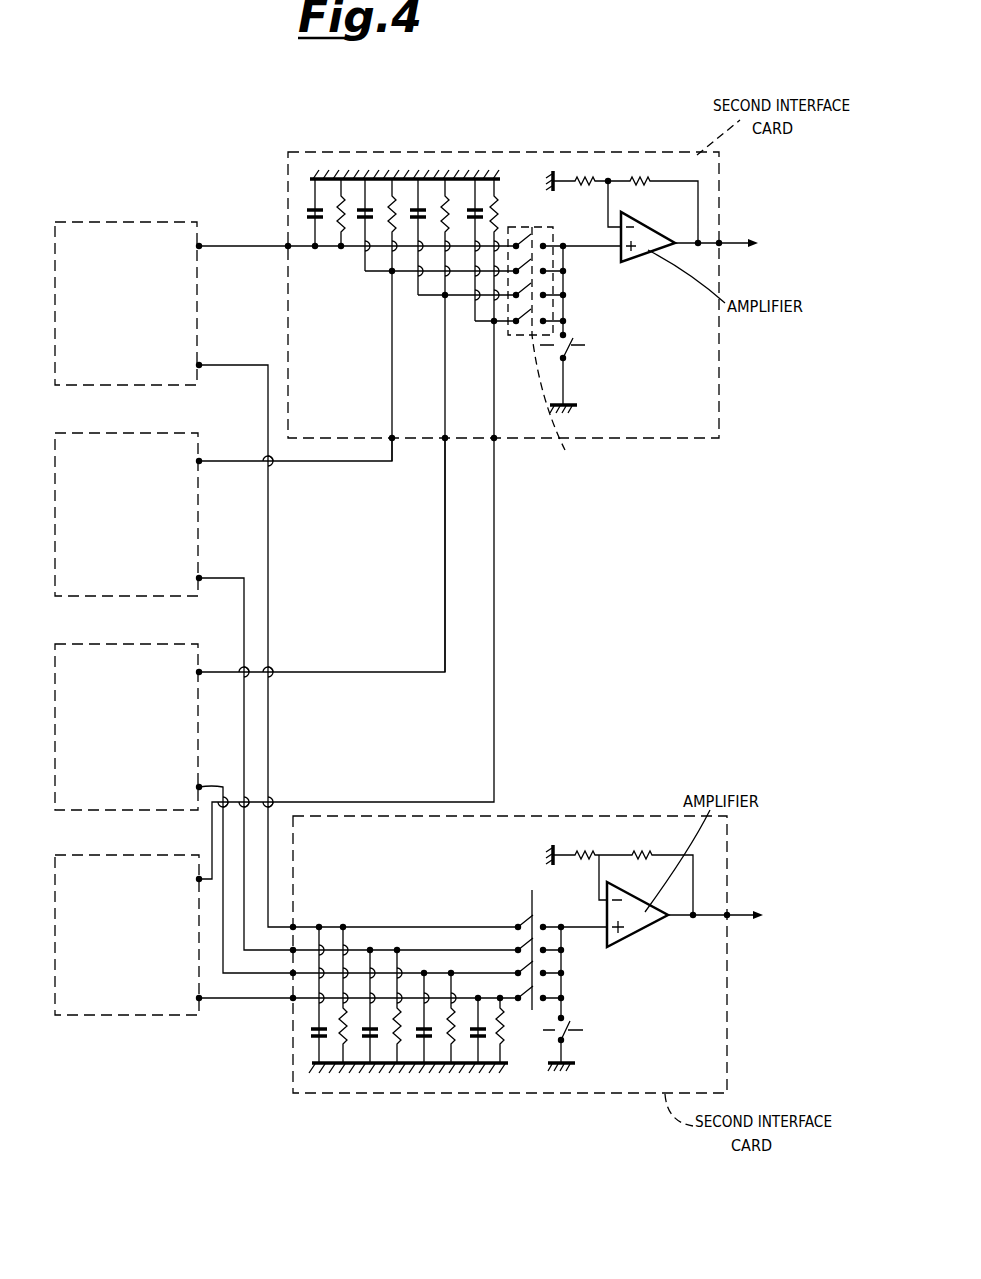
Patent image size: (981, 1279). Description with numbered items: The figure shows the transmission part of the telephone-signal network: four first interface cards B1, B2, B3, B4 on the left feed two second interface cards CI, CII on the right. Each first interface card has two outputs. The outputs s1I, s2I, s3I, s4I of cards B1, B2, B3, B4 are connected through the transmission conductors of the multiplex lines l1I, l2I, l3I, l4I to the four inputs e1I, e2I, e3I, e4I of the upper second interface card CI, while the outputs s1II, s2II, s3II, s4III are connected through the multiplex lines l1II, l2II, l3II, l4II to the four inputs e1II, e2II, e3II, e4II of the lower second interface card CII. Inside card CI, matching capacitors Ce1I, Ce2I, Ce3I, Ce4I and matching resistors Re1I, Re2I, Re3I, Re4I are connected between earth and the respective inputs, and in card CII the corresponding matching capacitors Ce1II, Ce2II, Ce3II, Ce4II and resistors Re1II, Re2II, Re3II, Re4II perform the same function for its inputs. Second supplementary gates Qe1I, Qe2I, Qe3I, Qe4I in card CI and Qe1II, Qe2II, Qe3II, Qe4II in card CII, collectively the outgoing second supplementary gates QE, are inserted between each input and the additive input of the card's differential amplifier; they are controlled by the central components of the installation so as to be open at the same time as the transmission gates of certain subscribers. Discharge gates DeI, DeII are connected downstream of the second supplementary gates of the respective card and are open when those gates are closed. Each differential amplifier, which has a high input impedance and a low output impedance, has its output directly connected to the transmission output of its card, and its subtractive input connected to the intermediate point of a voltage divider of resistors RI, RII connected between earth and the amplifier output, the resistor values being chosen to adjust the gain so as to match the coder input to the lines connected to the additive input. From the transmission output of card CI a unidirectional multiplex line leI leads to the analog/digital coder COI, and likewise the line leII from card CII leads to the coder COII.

The first interface card B1 is at (122, 222).
The first interface card B2 is at (138, 433).
The first interface card B3 is at (126, 644).
The first interface card B4 is at (128, 855).
The second interface card CI is at (641, 152).
The second interface card CII is at (508, 815).
The output s1I is at (200, 244).
The output s1II is at (200, 364).
The output s2I is at (201, 460).
The output s2II is at (201, 577).
The output s3I is at (201, 671).
The output s3II is at (200, 786).
The output s4I is at (197, 879).
The output s4III is at (197, 998).
The multiplex line l1I is at (231, 244).
The multiplex line l2I is at (237, 465).
The multiplex line l3I is at (446, 611).
The multiplex line l4I is at (495, 545).
The multiplex line l1II is at (269, 712).
The multiplex line l2II is at (246, 750).
The multiplex line l3II is at (222, 919).
The multiplex line l4II is at (213, 1005).
The input e1I is at (286, 251).
The input e2I is at (390, 436).
The input e3I is at (443, 441).
The input e4I is at (497, 441).
The input e1II is at (294, 948).
The input e2II is at (294, 926).
The input e3II is at (292, 976).
The input e4II is at (292, 1001).
The matching capacitor Ce1I is at (310, 208).
The matching capacitor Ce2I is at (367, 192).
The matching capacitor Ce3I is at (420, 194).
The matching capacitor Ce4I is at (478, 205).
The matching resistor Re1I is at (340, 194).
The matching resistor Re2I is at (393, 194).
The matching resistor Re3I is at (447, 194).
The matching resistor Re4I is at (500, 205).
The matching capacitor Ce1II is at (316, 1042).
The matching capacitor Ce2II is at (372, 1052).
The matching capacitor Ce3II is at (427, 1052).
The matching capacitor Ce4II is at (481, 1050).
The matching resistor Re1II is at (345, 1060).
The matching resistor Re2II is at (400, 1052).
The matching resistor Re3II is at (454, 1052).
The matching resistor Re4II is at (503, 1050).
The second supplementary gate Qe1I is at (528, 236).
The second supplementary gate Qe2I is at (552, 266).
The second supplementary gate Qe3I is at (552, 291).
The second supplementary gate Qe4I is at (552, 318).
The second supplementary gate Qe1II is at (529, 921).
The second supplementary gate Qe2II is at (538, 926).
The second supplementary gate Qe3II is at (547, 961).
The second supplementary gate Qe4II is at (547, 986).
The outgoing second supplementary gates QE is at (610, 370).
The discharge gate DeI is at (577, 359).
The discharge gate DeII is at (571, 1041).
The voltage divider resistor RI is at (606, 187).
The voltage divider resistor RII is at (645, 850).
The analog/digital coder COI is at (722, 232).
The analog/digital coder COII is at (724, 906).
The unidirectional multiplex line leI is at (729, 255).
The unidirectional multiplex line leII is at (742, 897).